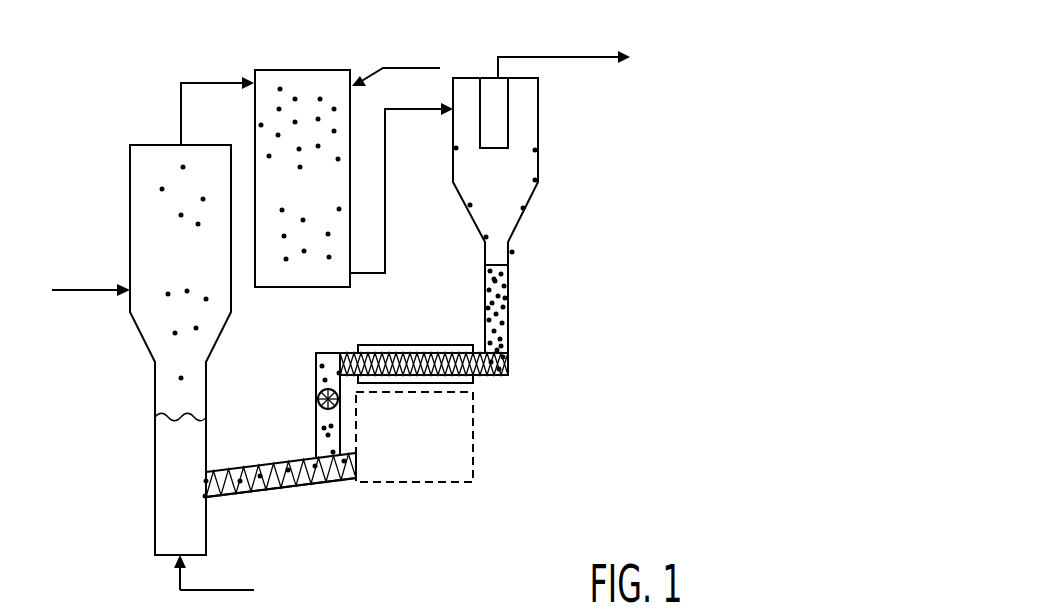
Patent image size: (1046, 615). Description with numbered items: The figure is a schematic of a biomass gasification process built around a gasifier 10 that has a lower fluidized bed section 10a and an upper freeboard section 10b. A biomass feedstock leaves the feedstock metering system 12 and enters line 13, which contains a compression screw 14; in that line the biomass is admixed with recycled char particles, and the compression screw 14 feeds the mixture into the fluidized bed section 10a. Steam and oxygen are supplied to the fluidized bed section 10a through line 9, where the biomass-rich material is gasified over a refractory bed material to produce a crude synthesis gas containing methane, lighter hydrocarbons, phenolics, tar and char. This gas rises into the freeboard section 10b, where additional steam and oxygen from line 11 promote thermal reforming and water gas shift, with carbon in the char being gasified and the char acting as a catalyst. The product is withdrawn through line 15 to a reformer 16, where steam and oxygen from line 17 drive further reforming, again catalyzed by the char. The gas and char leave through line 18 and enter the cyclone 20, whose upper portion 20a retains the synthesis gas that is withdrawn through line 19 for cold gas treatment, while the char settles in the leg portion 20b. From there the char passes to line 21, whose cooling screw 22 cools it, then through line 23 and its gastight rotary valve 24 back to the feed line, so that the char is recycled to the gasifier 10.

The line 9 is at (180, 590).
The gasifier 10 is at (106, 211).
The fluidized bed section 10a is at (164, 470).
The freeboard section 10b is at (137, 160).
The line 11 is at (93, 288).
The feedstock metering system 12 is at (473, 451).
The line 13 is at (293, 488).
The compression screw 14 is at (255, 470).
The line 15 is at (197, 82).
The reformer 16 is at (254, 109).
The line 17 is at (379, 74).
The line 18 is at (385, 146).
The line 19 is at (543, 56).
The cyclone 20 is at (546, 209).
The upper portion 20a is at (540, 130).
The leg portion 20b is at (510, 290).
The line 21 is at (482, 379).
The cooling screw 22 is at (435, 344).
The line 23 is at (314, 372).
The gastight rotary valve 24 is at (332, 408).